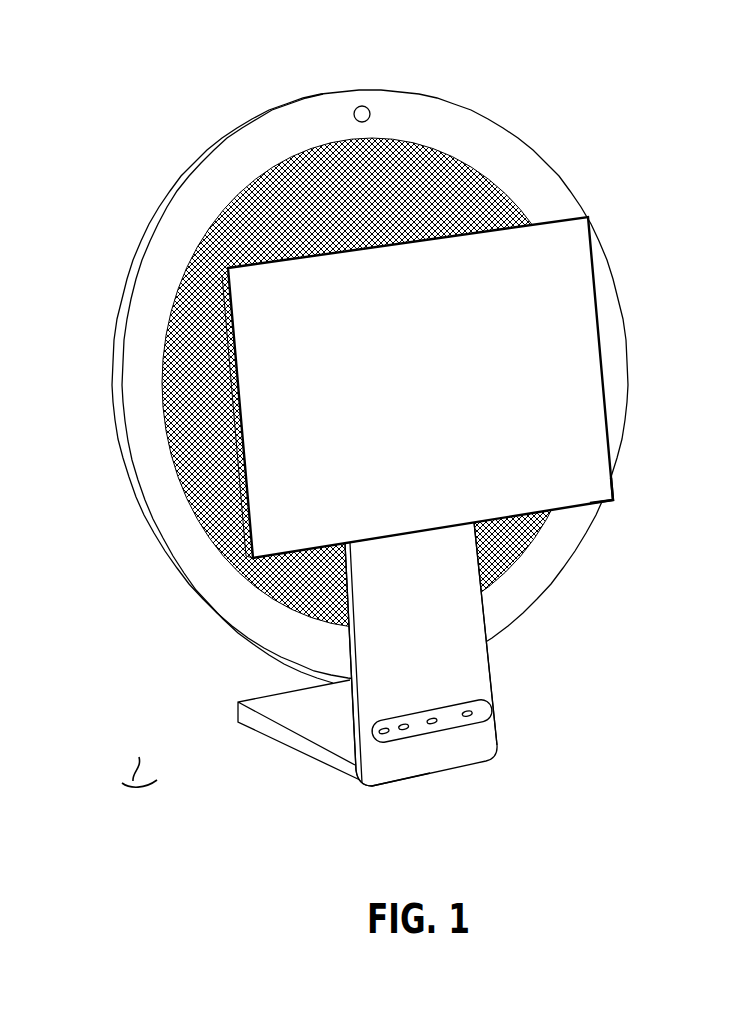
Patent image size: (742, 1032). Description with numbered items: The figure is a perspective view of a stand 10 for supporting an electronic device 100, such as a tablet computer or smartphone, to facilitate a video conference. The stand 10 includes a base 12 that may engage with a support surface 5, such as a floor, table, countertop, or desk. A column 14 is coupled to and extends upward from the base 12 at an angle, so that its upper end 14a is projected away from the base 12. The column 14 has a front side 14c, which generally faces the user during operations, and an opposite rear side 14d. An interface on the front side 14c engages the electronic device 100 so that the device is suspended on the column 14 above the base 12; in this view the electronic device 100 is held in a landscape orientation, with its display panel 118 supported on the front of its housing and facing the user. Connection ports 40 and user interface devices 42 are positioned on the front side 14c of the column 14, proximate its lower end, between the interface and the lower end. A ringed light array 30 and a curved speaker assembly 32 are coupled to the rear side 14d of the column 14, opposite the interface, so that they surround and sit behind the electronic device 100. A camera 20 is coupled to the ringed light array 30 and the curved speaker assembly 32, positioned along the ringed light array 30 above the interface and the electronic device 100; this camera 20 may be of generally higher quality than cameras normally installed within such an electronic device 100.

The support surface 5 is at (139, 758).
The stand 10 is at (395, 444).
The base 12 is at (297, 748).
The column 14 is at (387, 683).
The upper end 14a is at (357, 773).
The front side 14c is at (443, 655).
The rear side 14d is at (345, 672).
The camera 20 is at (371, 110).
The ringed light array 30 is at (505, 130).
The curved speaker assembly 32 is at (178, 481).
The connection ports 40 is at (470, 718).
The user interface devices 42 is at (385, 737).
The electronic device 100 is at (464, 389).
The display panel 118 is at (583, 490).